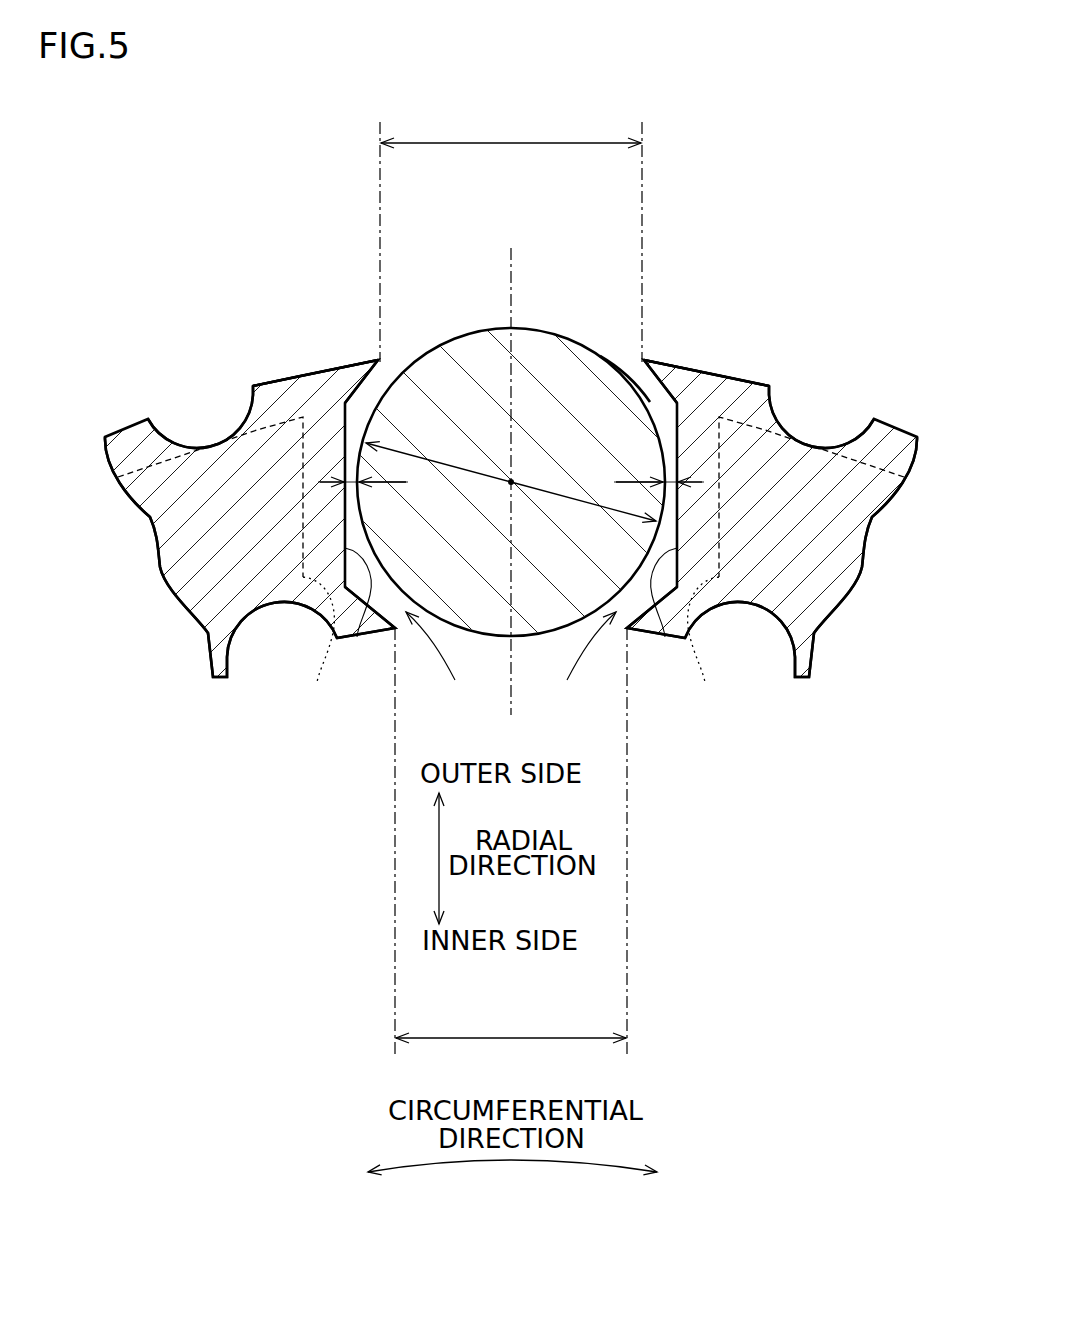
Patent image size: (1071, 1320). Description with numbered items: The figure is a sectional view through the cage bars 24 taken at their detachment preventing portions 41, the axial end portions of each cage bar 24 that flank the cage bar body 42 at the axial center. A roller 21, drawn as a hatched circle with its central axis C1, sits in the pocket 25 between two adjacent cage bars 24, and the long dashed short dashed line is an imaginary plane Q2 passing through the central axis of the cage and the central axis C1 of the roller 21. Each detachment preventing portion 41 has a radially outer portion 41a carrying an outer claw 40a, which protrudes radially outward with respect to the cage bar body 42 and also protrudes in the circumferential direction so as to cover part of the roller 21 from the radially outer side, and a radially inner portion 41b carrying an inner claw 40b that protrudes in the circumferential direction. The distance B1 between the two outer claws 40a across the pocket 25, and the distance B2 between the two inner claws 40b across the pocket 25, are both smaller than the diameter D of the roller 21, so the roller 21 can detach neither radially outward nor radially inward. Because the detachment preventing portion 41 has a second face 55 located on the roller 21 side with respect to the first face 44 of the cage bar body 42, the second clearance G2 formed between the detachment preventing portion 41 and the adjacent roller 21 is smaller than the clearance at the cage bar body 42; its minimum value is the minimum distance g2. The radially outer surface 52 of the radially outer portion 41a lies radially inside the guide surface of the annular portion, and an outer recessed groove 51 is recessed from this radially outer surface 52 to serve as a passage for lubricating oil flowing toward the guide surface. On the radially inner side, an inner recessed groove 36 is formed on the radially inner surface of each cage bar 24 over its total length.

The roller 21 is at (460, 338).
The cage bar 24 is at (113, 431).
The pocket 25 is at (631, 372).
The inner recessed groove 36 is at (281, 606).
The outer claw 40a is at (360, 368).
The inner claw 40b is at (396, 631).
The detachment preventing portion 41 is at (261, 378).
The radially outer portion 41a is at (283, 397).
The radially inner portion 41b is at (210, 636).
The cage bar body 42 is at (244, 398).
The face 44 is at (511, 645).
The outer recessed groove 51 is at (166, 430).
The radially outer surface 52 is at (320, 368).
The second face 55 is at (357, 637).
The distance between outer claws B1 is at (511, 237).
The distance between inner claws B2 is at (511, 843).
The central axis of the roller C1 is at (512, 480).
The diameter of the roller D is at (511, 478).
The minimum distance g2 is at (511, 480).
The second clearance G2 is at (511, 659).
The imaginary plane Q2 is at (513, 280).